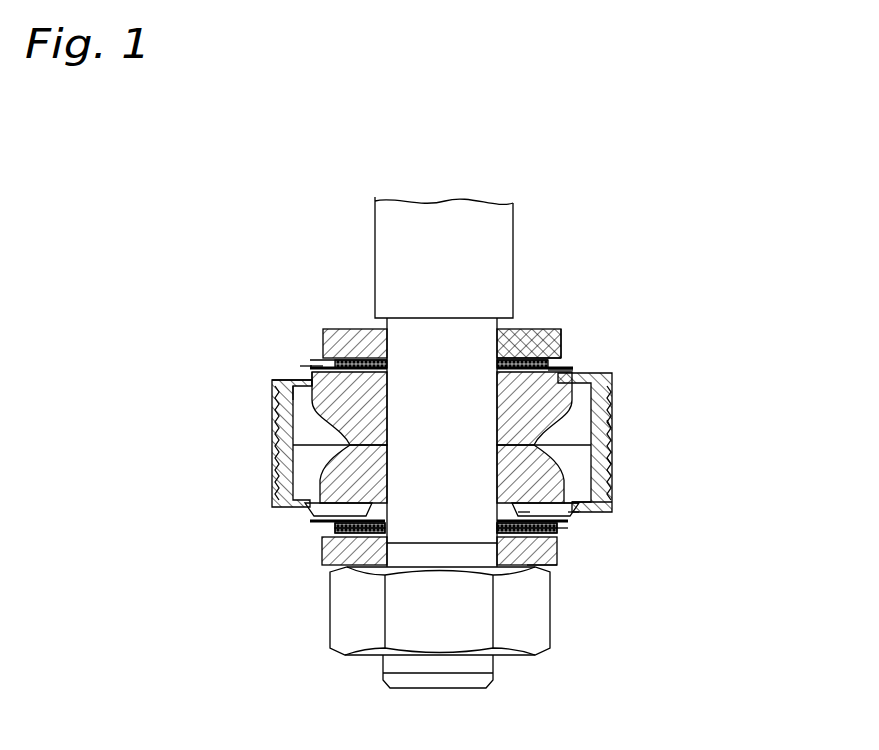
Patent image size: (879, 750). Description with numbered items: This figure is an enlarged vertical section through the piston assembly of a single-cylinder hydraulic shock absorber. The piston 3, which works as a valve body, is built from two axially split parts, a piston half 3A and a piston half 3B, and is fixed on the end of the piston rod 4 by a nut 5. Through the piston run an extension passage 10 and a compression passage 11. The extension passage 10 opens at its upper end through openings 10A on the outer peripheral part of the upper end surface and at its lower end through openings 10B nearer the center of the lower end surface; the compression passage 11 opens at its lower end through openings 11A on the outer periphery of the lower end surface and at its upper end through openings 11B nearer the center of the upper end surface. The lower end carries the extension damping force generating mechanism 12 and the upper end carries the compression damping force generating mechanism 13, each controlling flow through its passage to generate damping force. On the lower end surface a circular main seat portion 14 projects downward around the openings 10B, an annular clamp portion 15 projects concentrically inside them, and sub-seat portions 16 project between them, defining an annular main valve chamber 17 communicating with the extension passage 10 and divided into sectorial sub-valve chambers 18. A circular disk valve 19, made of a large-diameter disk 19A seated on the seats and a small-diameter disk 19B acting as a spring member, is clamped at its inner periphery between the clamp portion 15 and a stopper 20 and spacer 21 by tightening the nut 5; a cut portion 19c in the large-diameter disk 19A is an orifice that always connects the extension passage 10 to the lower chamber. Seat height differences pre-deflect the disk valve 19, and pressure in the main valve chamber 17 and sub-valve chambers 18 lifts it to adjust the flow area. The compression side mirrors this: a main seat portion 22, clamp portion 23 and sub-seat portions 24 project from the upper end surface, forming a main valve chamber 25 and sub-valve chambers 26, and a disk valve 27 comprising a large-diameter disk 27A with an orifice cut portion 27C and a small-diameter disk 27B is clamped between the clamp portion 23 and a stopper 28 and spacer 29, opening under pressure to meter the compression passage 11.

The piston 3 is at (715, 408).
The piston half 3A is at (612, 432).
The piston half 3B is at (612, 453).
The piston rod 4 is at (392, 220).
The nut 5 is at (343, 613).
The extension passage 10 is at (313, 450).
The opening 10A is at (310, 370).
The opening 10B is at (307, 513).
The compression passage 11 is at (560, 437).
The opening 11A is at (600, 490).
The opening 11B is at (558, 328).
The extension damping force generating mechanism 12 is at (580, 537).
The compression damping force generating mechanism 13 is at (298, 352).
The main seat portion 14 is at (572, 515).
The clamp portion 15 is at (525, 513).
The sub-seat portion 16 is at (560, 523).
The main valve chamber 17 is at (533, 567).
The sub-valve chamber 18 is at (570, 528).
The disk valve 19 is at (188, 542).
The large-diameter disk 19A is at (322, 529).
The small-diameter disk 19B is at (323, 532).
The cut portion 19c is at (310, 520).
The stopper 20 is at (322, 558).
The spacer 21 is at (377, 562).
The main seat portion 22 is at (317, 370).
The clamp portion 23 is at (363, 330).
The sub-seat portion 24 is at (317, 395).
The main valve chamber 25 is at (320, 367).
The sub-valve chamber 26 is at (300, 353).
The disk valve 27 is at (705, 293).
The large-diameter disk 27A is at (560, 364).
The small-diameter disk 27B is at (560, 343).
The cut portion 27C is at (573, 370).
The stopper 28 is at (520, 333).
The spacer 29 is at (540, 330).